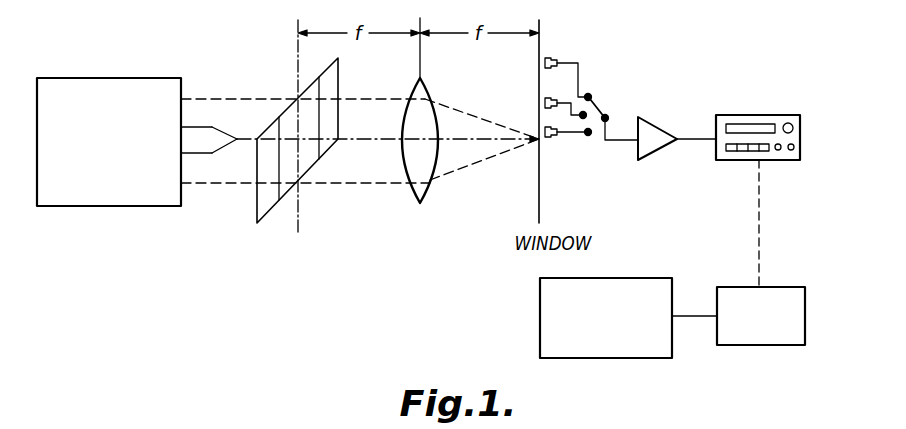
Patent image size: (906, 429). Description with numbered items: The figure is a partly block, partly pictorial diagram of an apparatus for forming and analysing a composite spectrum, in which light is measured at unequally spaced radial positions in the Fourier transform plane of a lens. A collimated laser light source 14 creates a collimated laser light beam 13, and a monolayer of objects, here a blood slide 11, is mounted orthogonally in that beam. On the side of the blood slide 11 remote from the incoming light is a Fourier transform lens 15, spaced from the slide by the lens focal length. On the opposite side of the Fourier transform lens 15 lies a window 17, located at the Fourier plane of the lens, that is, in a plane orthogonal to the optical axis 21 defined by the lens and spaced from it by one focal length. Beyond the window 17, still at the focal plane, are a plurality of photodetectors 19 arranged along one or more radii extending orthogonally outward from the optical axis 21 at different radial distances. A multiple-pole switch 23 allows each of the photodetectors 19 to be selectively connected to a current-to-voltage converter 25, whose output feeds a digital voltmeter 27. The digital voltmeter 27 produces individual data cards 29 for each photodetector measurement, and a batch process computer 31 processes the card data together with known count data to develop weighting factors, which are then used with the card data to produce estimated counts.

The blood slide 11 is at (297, 98).
The collimated laser light beam 13 is at (217, 172).
The collimated laser light source 14 is at (113, 206).
The Fourier transform lens 15 is at (427, 90).
The window 17 is at (543, 52).
The photodetectors 19 is at (550, 148).
The optical axis 21 is at (375, 142).
The multiple-pole switch 23 is at (607, 108).
The current-to-voltage converter 25 is at (655, 128).
The digital voltmeter 27 is at (802, 146).
The data cards 29 is at (796, 287).
The batch process computer 31 is at (650, 278).